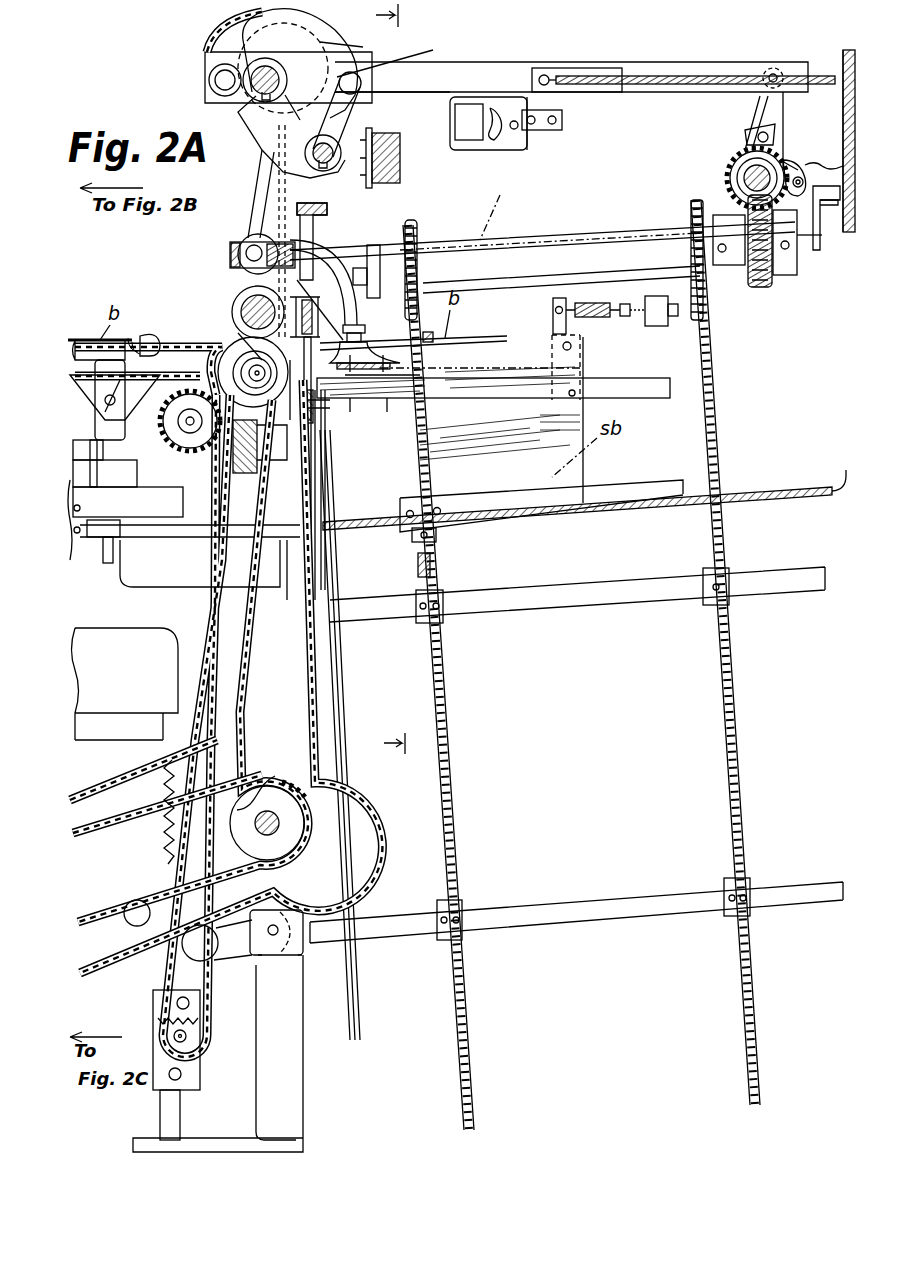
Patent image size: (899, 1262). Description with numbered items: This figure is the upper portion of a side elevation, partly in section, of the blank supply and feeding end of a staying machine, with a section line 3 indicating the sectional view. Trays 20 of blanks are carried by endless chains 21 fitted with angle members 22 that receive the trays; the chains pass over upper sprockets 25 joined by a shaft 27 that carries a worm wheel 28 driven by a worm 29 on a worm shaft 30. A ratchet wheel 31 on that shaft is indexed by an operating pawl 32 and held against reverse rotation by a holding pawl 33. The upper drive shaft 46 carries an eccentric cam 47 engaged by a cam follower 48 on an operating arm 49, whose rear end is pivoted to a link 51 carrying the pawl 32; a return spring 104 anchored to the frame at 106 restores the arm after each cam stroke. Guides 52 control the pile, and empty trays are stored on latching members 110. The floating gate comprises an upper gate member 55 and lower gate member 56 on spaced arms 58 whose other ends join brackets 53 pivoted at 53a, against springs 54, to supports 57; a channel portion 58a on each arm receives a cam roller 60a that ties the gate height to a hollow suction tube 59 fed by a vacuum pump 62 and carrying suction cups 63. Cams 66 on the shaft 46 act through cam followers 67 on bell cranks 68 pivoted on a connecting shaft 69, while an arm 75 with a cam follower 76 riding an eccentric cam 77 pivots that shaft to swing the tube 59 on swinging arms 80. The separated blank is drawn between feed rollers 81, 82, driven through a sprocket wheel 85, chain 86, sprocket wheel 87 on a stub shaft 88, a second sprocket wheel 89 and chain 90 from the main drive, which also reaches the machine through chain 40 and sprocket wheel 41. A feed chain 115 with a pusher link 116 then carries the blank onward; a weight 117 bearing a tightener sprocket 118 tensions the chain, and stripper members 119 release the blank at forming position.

The section line 3 is at (383, 379).
The tray 20 is at (505, 210).
The endless chain 21 is at (422, 470).
The angle member 22 is at (565, 490).
The upper sprocket 25 is at (420, 245).
The shaft 27 is at (548, 258).
The worm wheel 28 is at (770, 290).
The worm 29 is at (740, 188).
The worm shaft 30 is at (738, 172).
The ratchet wheel 31 is at (780, 158).
The operating pawl 32 is at (745, 140).
The holding pawl 33 is at (800, 160).
The chain 40 is at (95, 798).
The sprocket wheel 41 is at (165, 835).
The upper drive shaft 46 is at (258, 96).
The eccentric cam 47 is at (240, 42).
The cam follower 48 is at (208, 78).
The operating arm 49 is at (650, 68).
The link 51 is at (760, 100).
The guide 52 is at (340, 675).
The bracket 53 is at (553, 302).
The pivot point 53a is at (562, 344).
The spring 54 is at (592, 303).
The upper gate member 55 is at (372, 318).
The lower gate member 56 is at (310, 433).
The support 57 is at (658, 300).
The arm 58 is at (513, 398).
The channel portion 58a is at (395, 405).
The hollow tube 59 is at (230, 248).
The cam roller 60a is at (330, 420).
The vacuum pump 62 is at (145, 635).
The suction cup 63 is at (380, 338).
The cam 66 is at (320, 40).
The cam follower 67 is at (362, 83).
The bell crank 68 is at (350, 126).
The connecting shaft 69 is at (328, 171).
The arm 75 is at (290, 128).
The cam follower 76 is at (395, 59).
The eccentric cam 77 is at (363, 48).
The swinging arm 80 is at (265, 180).
The feed roller 81 is at (240, 300).
The feed roller 82 is at (210, 346).
The sprocket wheel 85 is at (243, 340).
The chain 86 is at (318, 570).
The sprocket wheel 87 is at (302, 812).
The stub shaft 88 is at (278, 830).
The sprocket wheel 89 is at (255, 790).
The chain 90 is at (90, 820).
The return spring 104 is at (720, 86).
The frame anchor 106 is at (840, 66).
The latching member 110 is at (323, 250).
The feed chain 115 is at (205, 995).
The pusher link 116 is at (152, 333).
The weight 117 is at (185, 1075).
The tightener sprocket 118 is at (190, 1034).
The stripper member 119 is at (88, 340).